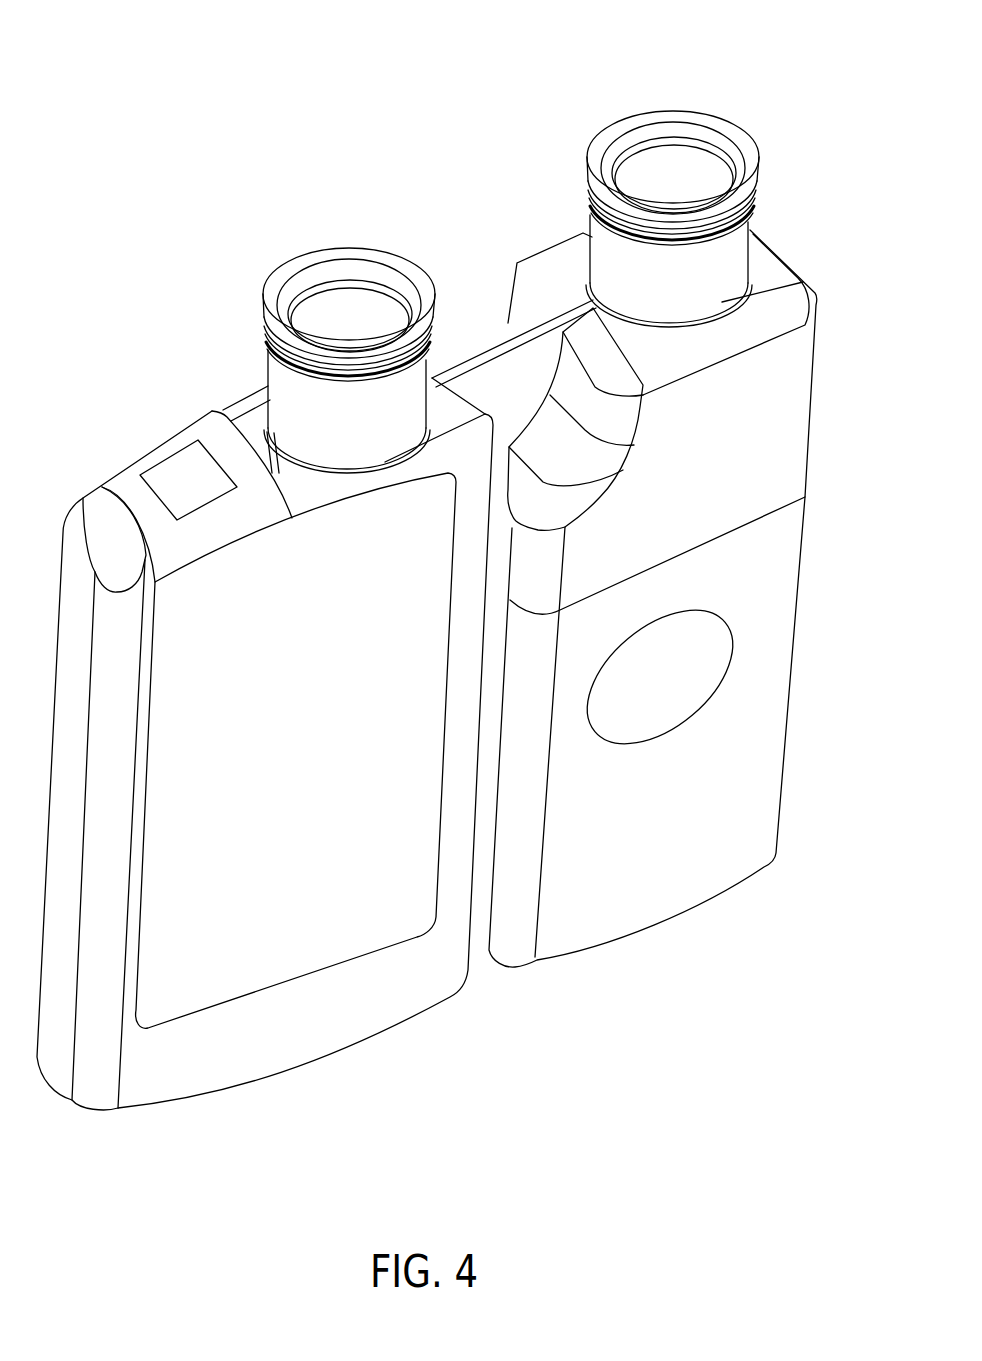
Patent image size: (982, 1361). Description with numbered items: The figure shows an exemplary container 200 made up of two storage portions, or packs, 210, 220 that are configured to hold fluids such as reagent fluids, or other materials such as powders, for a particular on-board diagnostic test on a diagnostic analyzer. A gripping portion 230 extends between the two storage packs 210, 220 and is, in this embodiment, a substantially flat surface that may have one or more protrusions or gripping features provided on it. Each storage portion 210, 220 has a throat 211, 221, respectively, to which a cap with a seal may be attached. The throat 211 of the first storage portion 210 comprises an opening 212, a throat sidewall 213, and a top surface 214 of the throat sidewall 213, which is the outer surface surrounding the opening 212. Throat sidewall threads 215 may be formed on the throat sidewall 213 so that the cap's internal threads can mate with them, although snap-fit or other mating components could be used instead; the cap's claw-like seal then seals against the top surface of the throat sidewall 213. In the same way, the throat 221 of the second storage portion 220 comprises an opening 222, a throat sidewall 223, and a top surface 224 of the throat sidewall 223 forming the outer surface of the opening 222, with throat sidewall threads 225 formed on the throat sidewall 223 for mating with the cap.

The container 200 is at (176, 152).
The storage portion 210 is at (327, 1030).
The throat 211 is at (218, 378).
The opening 212 is at (343, 300).
The throat sidewall 213 is at (267, 368).
The top surface of the throat sidewall 214 is at (310, 260).
The throat sidewall threads 215 is at (437, 350).
The storage portion 220 is at (668, 900).
The throat 221 is at (770, 180).
The opening 222 is at (686, 170).
The throat sidewall 223 is at (598, 247).
The top surface of the throat sidewall 224 is at (647, 112).
The throat sidewall threads 225 is at (588, 223).
The gripping portion 230 is at (517, 368).